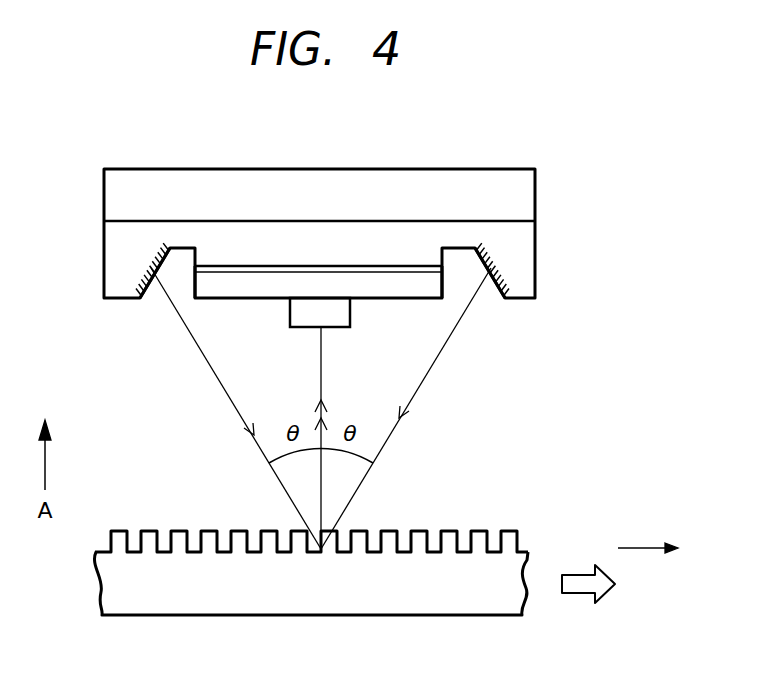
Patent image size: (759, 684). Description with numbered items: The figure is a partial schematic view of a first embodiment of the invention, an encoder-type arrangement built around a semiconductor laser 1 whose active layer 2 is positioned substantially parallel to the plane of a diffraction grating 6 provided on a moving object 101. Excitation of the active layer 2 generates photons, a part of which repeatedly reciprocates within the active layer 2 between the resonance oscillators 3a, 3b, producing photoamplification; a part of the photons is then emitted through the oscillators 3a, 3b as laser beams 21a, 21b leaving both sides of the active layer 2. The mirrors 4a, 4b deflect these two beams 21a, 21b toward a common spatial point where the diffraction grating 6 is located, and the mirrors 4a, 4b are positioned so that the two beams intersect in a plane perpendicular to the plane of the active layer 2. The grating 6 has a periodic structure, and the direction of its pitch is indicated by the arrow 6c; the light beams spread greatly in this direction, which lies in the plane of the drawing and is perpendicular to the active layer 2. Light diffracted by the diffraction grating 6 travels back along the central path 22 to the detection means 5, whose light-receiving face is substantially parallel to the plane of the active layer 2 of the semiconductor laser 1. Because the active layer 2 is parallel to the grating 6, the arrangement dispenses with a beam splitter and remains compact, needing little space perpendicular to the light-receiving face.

The semiconductor laser 1 is at (527, 190).
The active layer 2 is at (298, 266).
The resonance oscillator 3a is at (443, 289).
The resonance oscillator 3b is at (190, 292).
The mirror 4a is at (499, 270).
The mirror 4b is at (146, 272).
The detection means 5 is at (332, 314).
The diffraction grating 6 is at (479, 531).
The arrow indicating direction of grating pitch 6c is at (643, 547).
The laser beam 21a is at (432, 367).
The laser beam 21b is at (237, 410).
The incident light beam 22 is at (321, 367).
The moving object 101 is at (527, 590).